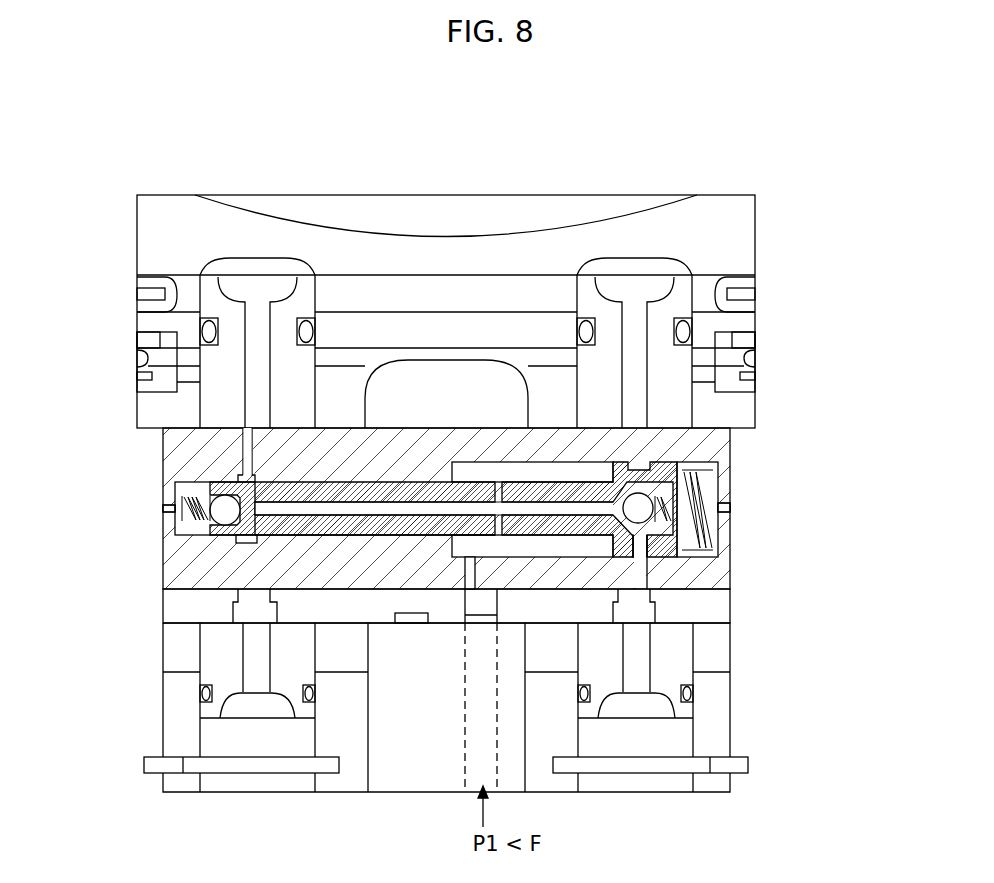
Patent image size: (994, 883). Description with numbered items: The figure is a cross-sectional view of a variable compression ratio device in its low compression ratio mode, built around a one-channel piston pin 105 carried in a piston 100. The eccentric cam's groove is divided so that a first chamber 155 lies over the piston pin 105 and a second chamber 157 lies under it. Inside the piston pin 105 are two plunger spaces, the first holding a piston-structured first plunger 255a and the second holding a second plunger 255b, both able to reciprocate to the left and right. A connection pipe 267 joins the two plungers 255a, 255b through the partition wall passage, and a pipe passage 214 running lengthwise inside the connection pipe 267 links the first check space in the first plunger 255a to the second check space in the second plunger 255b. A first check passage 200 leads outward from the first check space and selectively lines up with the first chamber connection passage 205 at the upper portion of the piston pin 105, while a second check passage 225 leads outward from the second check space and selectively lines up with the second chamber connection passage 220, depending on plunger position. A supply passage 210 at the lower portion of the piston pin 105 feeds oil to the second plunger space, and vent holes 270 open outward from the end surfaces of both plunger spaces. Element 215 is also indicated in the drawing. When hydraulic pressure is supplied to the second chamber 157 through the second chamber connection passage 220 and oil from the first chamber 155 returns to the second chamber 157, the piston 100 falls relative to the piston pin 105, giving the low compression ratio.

The piston 100 is at (745, 226).
The first chamber 155 is at (658, 283).
The piston pin 105 is at (713, 447).
The second chamber 157 is at (683, 737).
The first check passage 200 is at (175, 483).
The first chamber connection passage 205 is at (247, 450).
The supply passage 210 is at (467, 567).
The pipe passage 214 is at (343, 508).
The plunger rod 215 is at (500, 535).
The second chamber connection passage 220 is at (641, 545).
The second check passage 225 is at (643, 558).
The first plunger 255a is at (180, 547).
The second plunger 255b is at (670, 557).
The connection pipe 267 is at (290, 535).
The vent hole 270 is at (168, 510).